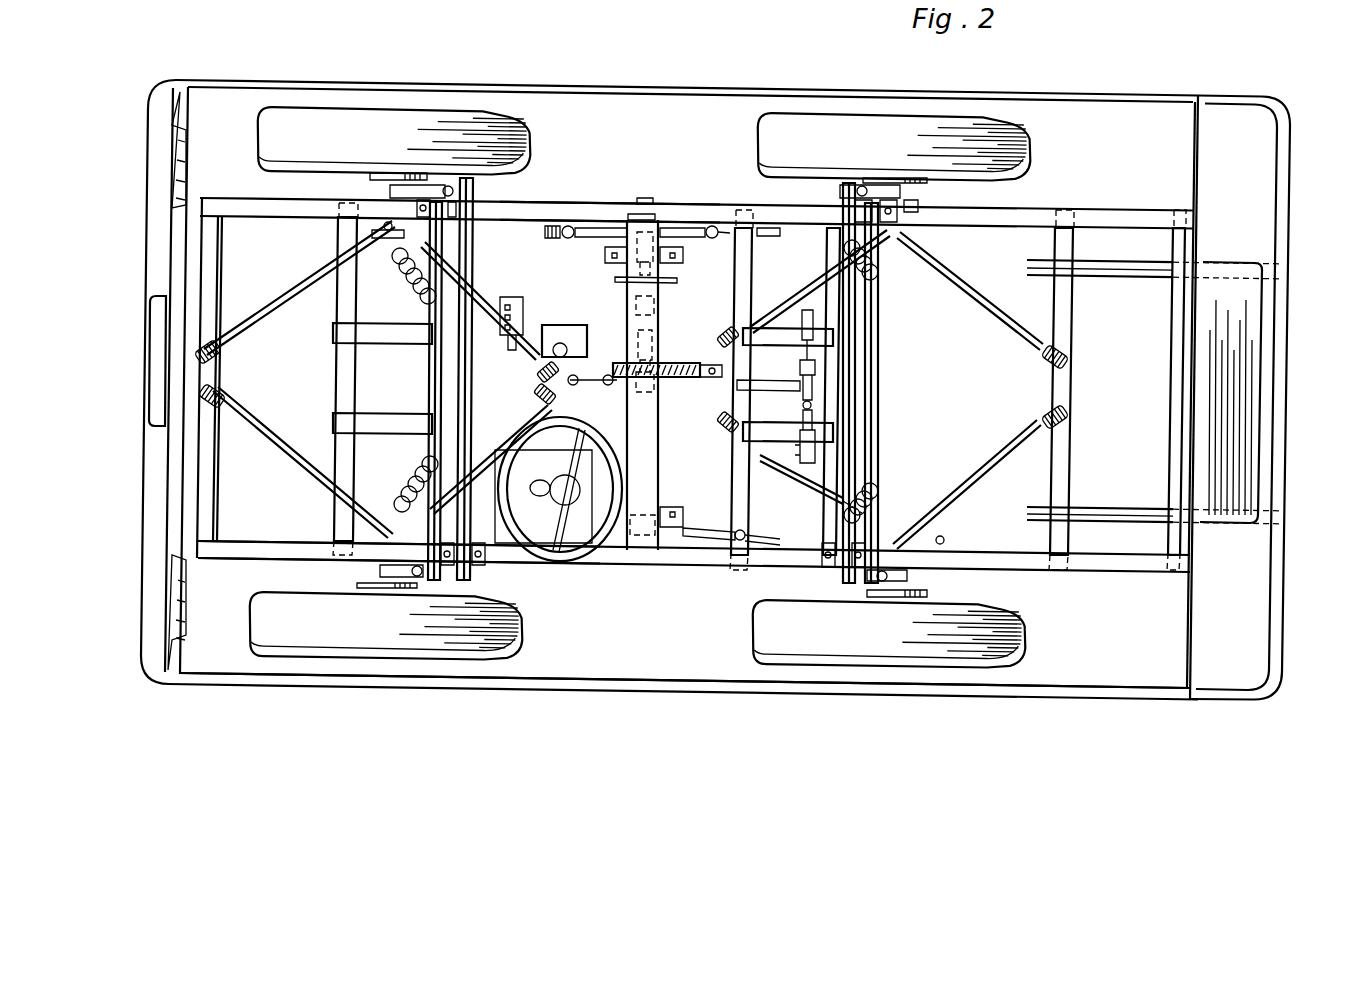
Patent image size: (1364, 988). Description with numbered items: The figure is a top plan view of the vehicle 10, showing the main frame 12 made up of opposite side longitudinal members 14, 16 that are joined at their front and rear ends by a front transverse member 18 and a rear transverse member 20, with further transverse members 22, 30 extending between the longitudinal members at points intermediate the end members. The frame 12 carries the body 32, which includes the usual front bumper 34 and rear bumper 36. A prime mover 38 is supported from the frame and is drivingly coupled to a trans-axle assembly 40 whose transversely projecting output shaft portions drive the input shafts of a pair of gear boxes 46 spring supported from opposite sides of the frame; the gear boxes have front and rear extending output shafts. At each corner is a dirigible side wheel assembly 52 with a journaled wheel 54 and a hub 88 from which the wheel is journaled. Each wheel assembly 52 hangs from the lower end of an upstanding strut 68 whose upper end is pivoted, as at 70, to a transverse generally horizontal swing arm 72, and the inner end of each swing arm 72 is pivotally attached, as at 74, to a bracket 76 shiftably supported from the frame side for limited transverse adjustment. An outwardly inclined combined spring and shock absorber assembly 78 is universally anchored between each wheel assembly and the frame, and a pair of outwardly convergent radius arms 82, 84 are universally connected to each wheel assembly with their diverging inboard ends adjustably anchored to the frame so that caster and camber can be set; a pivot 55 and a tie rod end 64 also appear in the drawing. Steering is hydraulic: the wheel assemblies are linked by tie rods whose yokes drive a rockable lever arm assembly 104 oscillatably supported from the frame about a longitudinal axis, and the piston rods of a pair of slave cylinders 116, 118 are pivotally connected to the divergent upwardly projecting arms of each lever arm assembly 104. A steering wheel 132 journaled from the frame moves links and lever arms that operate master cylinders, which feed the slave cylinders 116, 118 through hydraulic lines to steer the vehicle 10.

The vehicle 10 is at (542, 692).
The main frame 12 is at (574, 205).
The longitudinal member 14 is at (230, 545).
The longitudinal member 16 is at (609, 205).
The front transverse member 18 is at (212, 302).
The rear transverse member 20 is at (1175, 345).
The transverse member 22 is at (345, 386).
The transverse member 30 is at (1070, 466).
The body 32 is at (607, 88).
The front bumper 34 is at (160, 487).
The rear bumper 36 is at (1282, 232).
The prime mover 38 is at (583, 326).
The trans-axle assembly 40 is at (665, 398).
The gear box 46 is at (672, 226).
The dirigible side wheel assembly 52 is at (938, 197).
The wheel 54 is at (545, 143).
The pivot pin 55 is at (385, 226).
The tie rod end 64 is at (553, 234).
The strut 68 is at (433, 193).
The pivot 70 is at (832, 191).
The swing arm 72 is at (475, 228).
The pivot 74 is at (820, 560).
The bracket 76 is at (825, 572).
The combined spring and shock absorber assembly 78 is at (400, 305).
The radius arm 82 is at (262, 318).
The radius arm 84 is at (512, 432).
The hub 88 is at (372, 181).
The rockable lever arm assembly 104 is at (805, 390).
The slave cylinder 116 is at (800, 486).
The slave cylinder 118 is at (805, 336).
The steering wheel 132 is at (572, 556).